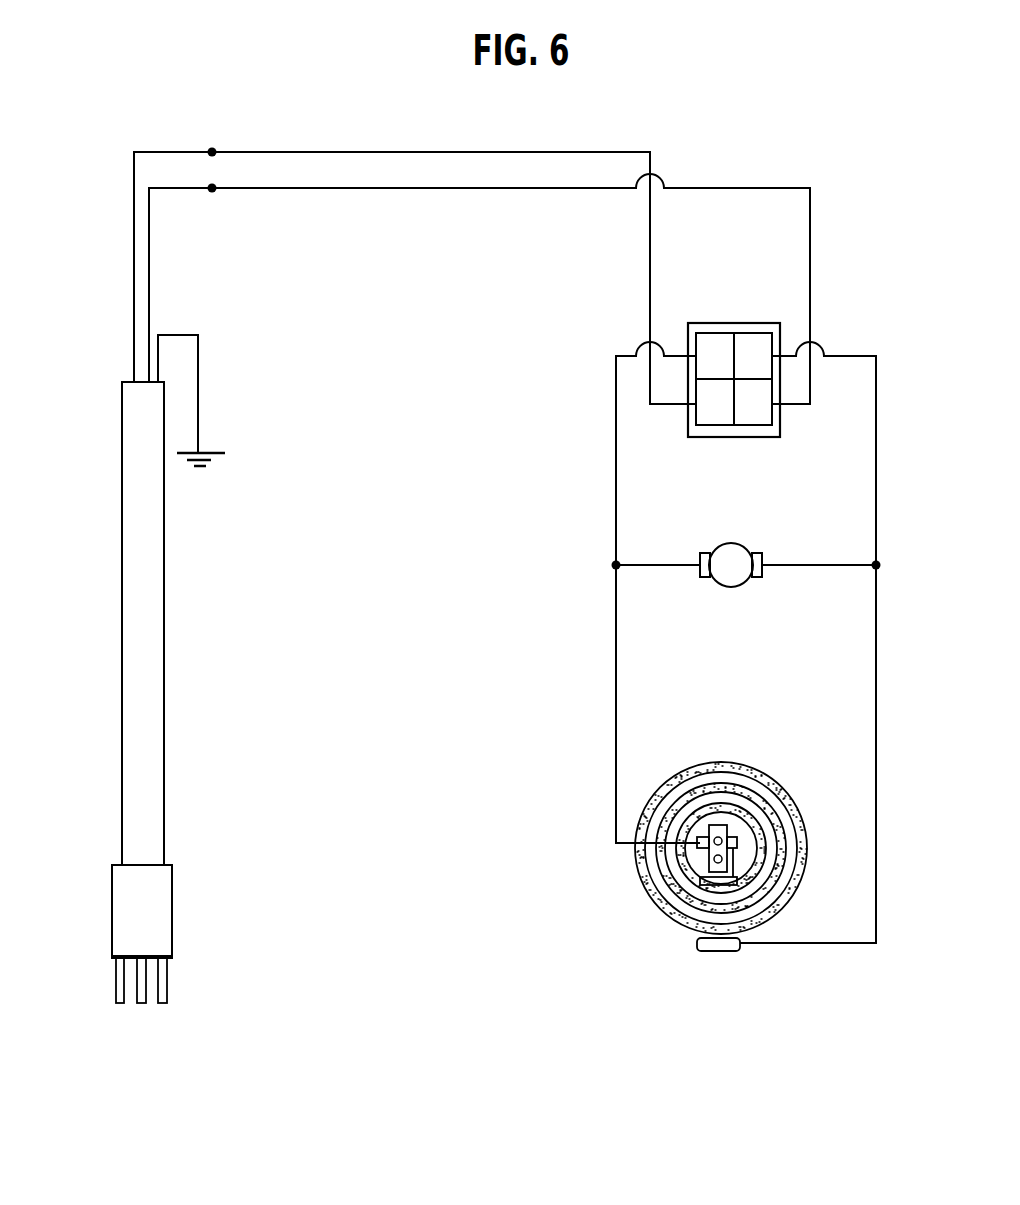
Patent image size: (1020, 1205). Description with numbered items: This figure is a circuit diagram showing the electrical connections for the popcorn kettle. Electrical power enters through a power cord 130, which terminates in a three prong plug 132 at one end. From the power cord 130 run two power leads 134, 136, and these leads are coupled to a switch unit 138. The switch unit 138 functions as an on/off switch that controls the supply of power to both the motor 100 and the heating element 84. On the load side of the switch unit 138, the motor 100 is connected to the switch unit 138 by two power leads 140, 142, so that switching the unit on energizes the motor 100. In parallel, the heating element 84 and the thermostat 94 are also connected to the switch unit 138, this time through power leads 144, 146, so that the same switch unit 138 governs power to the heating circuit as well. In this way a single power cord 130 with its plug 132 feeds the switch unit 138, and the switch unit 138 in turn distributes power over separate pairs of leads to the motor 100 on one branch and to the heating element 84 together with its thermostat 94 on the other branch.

The power lead 134 is at (134, 206).
The power lead 136 is at (367, 190).
The switch unit 138 is at (762, 322).
The power lead 140 is at (616, 422).
The power lead 142 is at (848, 356).
The power lead 144 is at (616, 700).
The power lead 146 is at (876, 698).
The motor 100 is at (743, 543).
The heating element 84 is at (797, 808).
The thermostat 94 is at (703, 860).
The power cord 130 is at (170, 878).
The three prong plug 132 is at (174, 940).